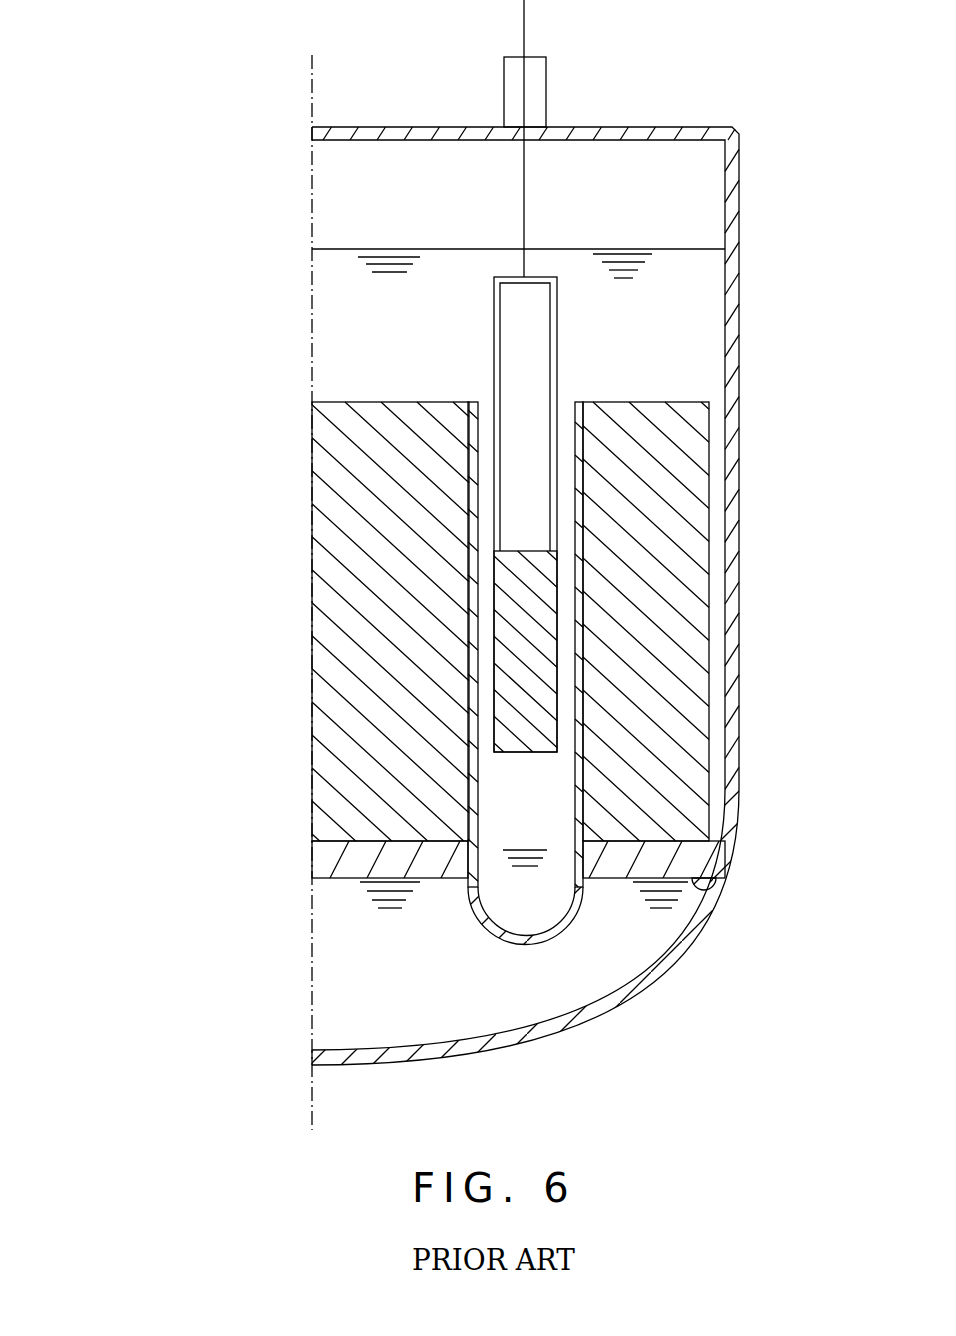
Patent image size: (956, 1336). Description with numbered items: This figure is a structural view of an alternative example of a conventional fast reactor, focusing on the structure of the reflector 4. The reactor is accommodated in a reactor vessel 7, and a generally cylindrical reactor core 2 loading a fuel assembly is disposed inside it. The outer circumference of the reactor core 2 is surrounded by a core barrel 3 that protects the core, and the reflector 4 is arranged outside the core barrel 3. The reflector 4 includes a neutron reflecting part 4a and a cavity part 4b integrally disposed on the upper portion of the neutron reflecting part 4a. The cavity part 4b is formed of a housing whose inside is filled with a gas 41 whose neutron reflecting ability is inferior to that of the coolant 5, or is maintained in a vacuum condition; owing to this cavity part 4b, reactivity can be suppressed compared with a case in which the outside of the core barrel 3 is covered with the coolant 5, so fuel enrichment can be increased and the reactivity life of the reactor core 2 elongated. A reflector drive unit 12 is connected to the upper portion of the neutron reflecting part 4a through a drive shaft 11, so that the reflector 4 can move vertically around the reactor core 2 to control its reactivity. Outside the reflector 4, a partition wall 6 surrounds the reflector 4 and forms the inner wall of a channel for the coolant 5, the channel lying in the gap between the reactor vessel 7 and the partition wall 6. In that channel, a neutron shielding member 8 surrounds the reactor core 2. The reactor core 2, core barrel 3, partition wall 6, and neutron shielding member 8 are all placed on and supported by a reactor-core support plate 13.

The reactor core 2 is at (322, 553).
The core barrel 3 is at (475, 401).
The reflector 4 is at (533, 558).
The neutron reflecting part 4a is at (538, 730).
The cavity part 4b is at (557, 305).
The gas 41 is at (513, 312).
The coolant 5 is at (361, 326).
The partition wall 6 is at (524, 646).
The reactor vessel 7 is at (740, 303).
The neutron shielding member 8 is at (705, 558).
The drive shaft 11 is at (524, 185).
The reflector drive unit 12 is at (546, 74).
The reactor-core support plate 13 is at (327, 866).